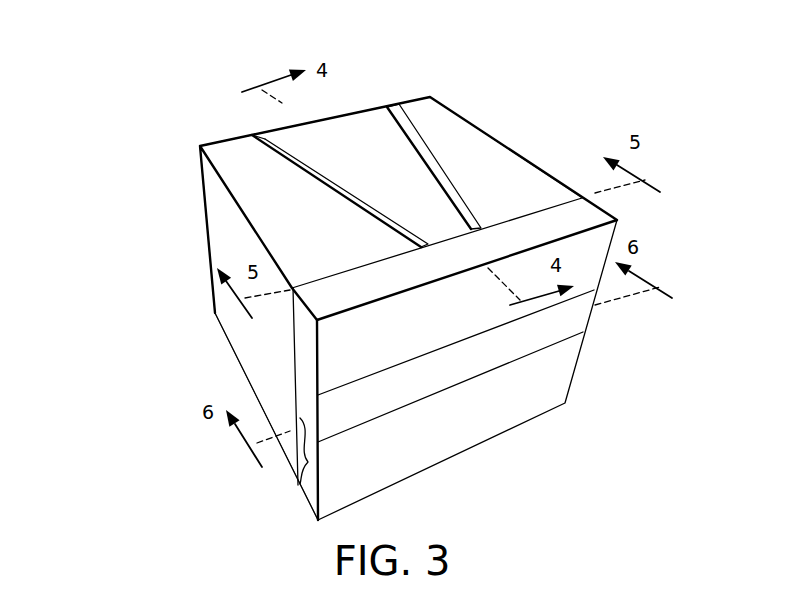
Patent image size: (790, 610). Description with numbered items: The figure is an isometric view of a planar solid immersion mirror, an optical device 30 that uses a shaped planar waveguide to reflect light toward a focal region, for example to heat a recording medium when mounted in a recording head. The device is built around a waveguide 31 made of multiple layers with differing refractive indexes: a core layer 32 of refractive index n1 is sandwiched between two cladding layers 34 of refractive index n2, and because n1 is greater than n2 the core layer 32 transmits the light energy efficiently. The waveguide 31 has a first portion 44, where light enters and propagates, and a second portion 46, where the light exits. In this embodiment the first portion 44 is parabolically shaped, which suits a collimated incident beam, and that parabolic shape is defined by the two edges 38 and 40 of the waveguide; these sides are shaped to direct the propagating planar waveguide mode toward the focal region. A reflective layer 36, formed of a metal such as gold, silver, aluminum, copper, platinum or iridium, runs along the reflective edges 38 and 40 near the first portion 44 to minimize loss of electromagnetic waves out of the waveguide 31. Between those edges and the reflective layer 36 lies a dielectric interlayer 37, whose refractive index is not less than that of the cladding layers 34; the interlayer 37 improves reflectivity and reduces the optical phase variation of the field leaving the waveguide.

The optical device 30 is at (361, 304).
The waveguide 31 is at (400, 167).
The core layer 32 is at (280, 459).
The cladding layer 34 is at (481, 357).
The reflective layer 36 is at (342, 306).
The interlayer 37 is at (335, 102).
The edge of the waveguide 38 is at (340, 191).
The edge of the waveguide 40 is at (438, 166).
The first portion of the waveguide 44 is at (172, 231).
The second portion of the waveguide 46 is at (243, 318).